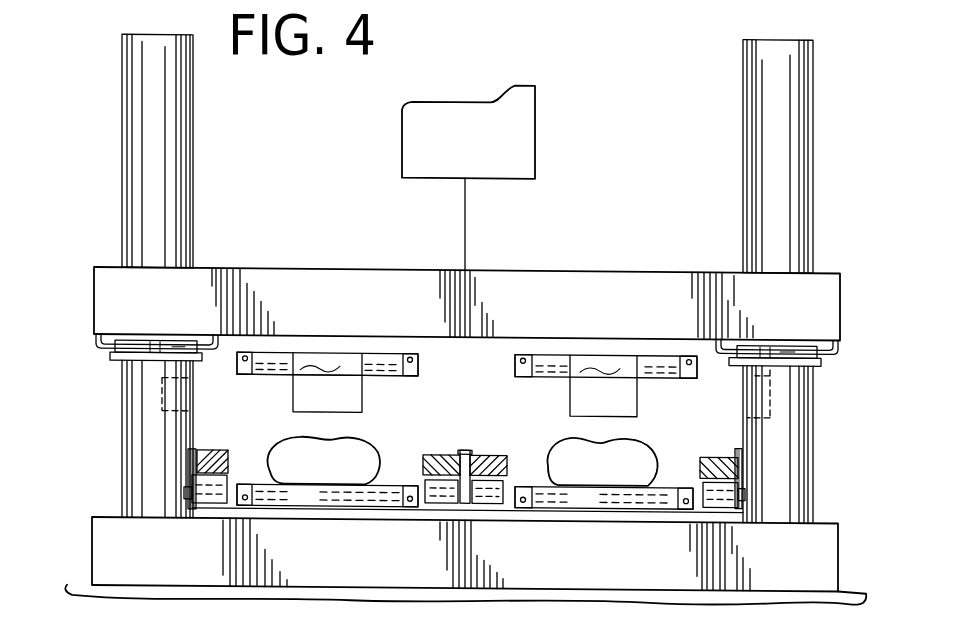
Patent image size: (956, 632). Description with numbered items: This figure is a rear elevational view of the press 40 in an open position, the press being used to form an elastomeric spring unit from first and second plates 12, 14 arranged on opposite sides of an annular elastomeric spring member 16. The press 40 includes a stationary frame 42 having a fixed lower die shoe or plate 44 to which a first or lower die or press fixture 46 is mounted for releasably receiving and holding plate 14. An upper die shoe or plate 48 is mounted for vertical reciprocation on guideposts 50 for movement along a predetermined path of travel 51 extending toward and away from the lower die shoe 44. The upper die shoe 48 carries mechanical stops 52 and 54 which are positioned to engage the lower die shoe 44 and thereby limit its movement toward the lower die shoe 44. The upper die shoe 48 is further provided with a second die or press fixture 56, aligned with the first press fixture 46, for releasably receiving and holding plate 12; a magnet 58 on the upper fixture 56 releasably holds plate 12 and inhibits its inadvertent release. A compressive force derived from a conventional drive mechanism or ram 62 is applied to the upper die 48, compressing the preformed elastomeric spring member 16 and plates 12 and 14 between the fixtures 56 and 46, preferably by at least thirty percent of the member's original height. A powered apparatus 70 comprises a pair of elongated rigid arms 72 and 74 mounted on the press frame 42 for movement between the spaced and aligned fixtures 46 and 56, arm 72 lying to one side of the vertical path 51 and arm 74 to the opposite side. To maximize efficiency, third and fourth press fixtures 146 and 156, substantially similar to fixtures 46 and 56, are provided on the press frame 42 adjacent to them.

The press 40 is at (104, 451).
The stationary frame 42 is at (83, 583).
The fixed die shoe or plate 44 is at (103, 528).
The first or lower die or press fixture 46 is at (250, 474).
The upper die shoe or plate 48 is at (617, 282).
The guideposts 50 is at (181, 168).
The predetermined path of travel 51 is at (464, 352).
The mechanical stop 52 is at (345, 391).
The mechanical stop 54 is at (165, 376).
The second die or press fixture 56 is at (407, 374).
The magnet 58 is at (300, 357).
The drive mechanism or ram 62 is at (482, 151).
The powered apparatus 70 is at (460, 442).
The arm 72 is at (430, 447).
The arm 74 is at (213, 447).
The first plate 12 is at (280, 371).
The second plate 14 is at (296, 496).
The annular elastomeric spring member 16 is at (385, 439).
The third press fixture 146 is at (523, 472).
The fourth press fixture 156 is at (658, 378).